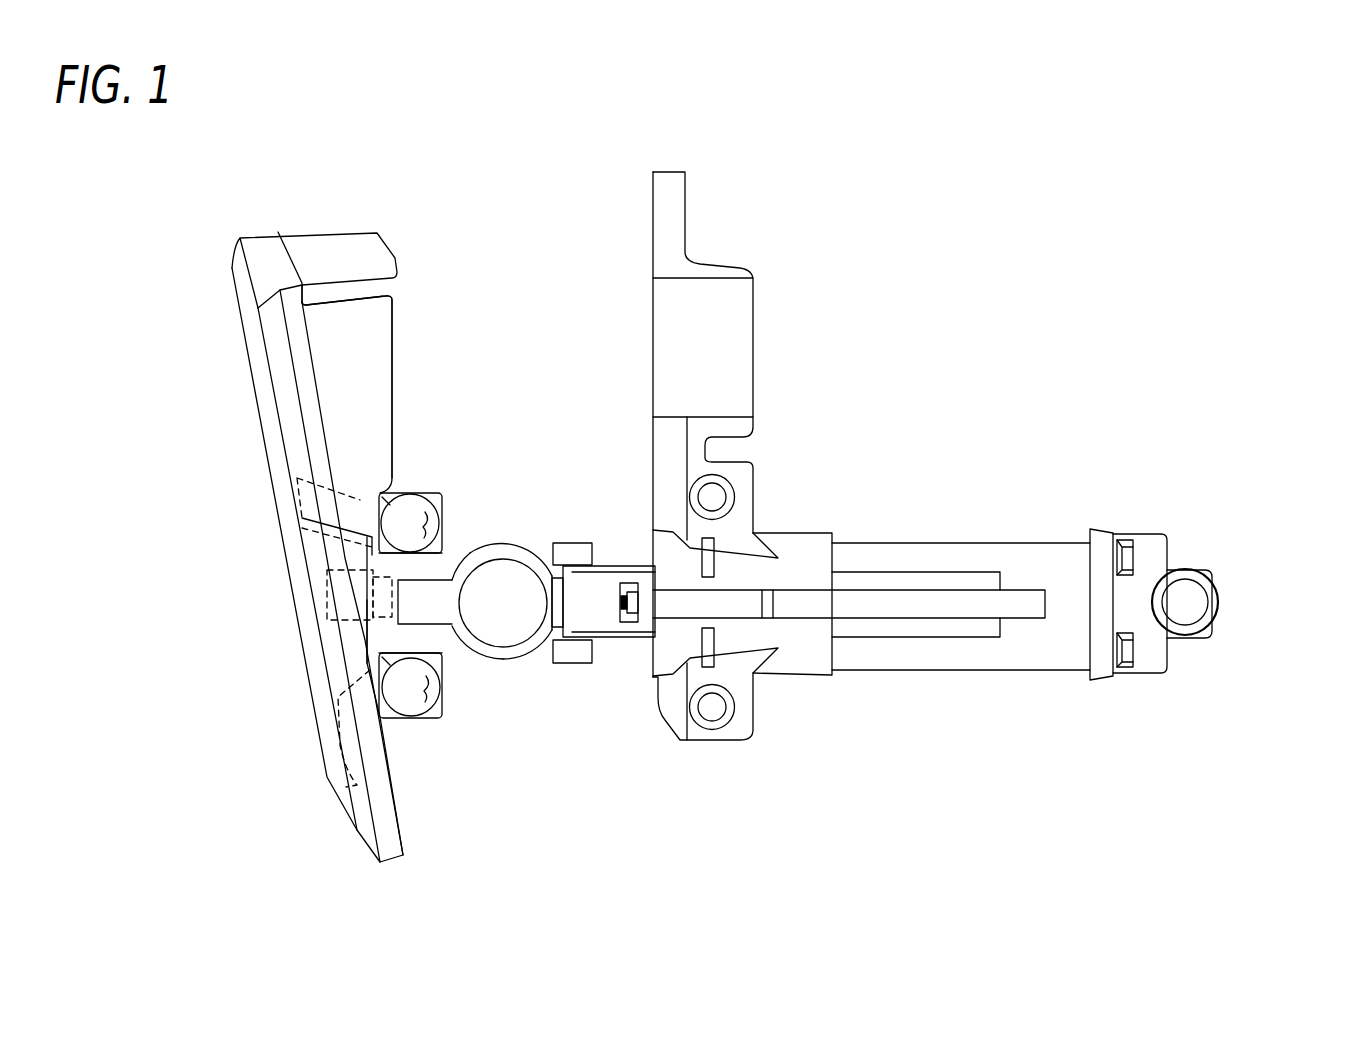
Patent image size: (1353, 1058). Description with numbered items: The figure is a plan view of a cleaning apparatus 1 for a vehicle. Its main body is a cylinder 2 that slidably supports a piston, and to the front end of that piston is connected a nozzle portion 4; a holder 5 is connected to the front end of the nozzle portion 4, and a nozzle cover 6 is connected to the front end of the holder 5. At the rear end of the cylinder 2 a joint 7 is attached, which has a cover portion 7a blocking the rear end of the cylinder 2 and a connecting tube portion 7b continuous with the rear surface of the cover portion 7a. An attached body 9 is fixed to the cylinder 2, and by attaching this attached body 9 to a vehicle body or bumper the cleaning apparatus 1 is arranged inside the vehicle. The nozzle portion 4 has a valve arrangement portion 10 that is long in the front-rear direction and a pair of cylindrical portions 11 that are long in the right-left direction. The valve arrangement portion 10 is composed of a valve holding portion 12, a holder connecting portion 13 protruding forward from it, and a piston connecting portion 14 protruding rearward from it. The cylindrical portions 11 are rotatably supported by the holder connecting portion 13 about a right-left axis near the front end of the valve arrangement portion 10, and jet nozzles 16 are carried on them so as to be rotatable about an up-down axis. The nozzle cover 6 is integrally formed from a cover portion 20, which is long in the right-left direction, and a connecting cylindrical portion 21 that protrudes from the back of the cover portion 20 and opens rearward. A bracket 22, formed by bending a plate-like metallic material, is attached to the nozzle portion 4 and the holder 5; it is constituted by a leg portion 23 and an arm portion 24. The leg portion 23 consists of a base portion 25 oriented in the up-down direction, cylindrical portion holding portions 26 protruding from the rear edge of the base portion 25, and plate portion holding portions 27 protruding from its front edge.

The cleaning apparatus 1 is at (1086, 250).
The cylinder 2 is at (1047, 548).
The nozzle portion 4 is at (500, 547).
The holder 5 is at (395, 572).
The nozzle cover 6 is at (315, 245).
The joint 7 is at (1150, 535).
The cover portion 7a is at (1152, 665).
The connecting tube portion 7b is at (1212, 602).
The attached body 9 is at (737, 335).
The valve arrangement portion 10 is at (496, 660).
The cylindrical portion 11 is at (432, 505).
The valve holding portion 12 is at (548, 628).
The holder connecting portion 13 is at (480, 657).
The piston connecting portion 14 is at (608, 572).
The jet nozzle 16 is at (412, 500).
The cover portion 20 is at (380, 298).
The connecting cylindrical portion 21 is at (327, 572).
The bracket 22 is at (468, 550).
The leg portion 23 is at (482, 545).
The arm portion 24 is at (300, 483).
The base portion 25 is at (367, 634).
The cylindrical portion holding portion 26 is at (447, 557).
The plate portion holding portion 27 is at (367, 550).